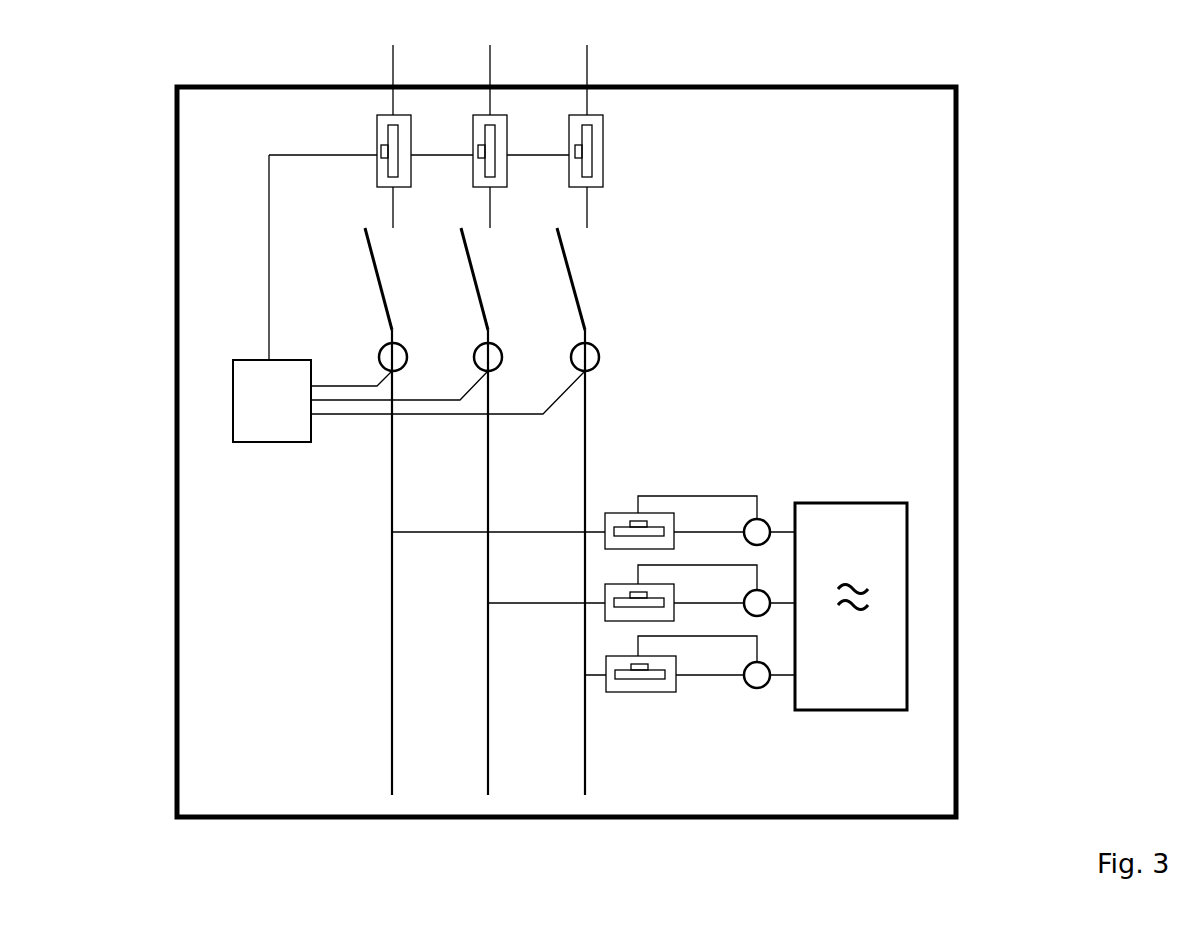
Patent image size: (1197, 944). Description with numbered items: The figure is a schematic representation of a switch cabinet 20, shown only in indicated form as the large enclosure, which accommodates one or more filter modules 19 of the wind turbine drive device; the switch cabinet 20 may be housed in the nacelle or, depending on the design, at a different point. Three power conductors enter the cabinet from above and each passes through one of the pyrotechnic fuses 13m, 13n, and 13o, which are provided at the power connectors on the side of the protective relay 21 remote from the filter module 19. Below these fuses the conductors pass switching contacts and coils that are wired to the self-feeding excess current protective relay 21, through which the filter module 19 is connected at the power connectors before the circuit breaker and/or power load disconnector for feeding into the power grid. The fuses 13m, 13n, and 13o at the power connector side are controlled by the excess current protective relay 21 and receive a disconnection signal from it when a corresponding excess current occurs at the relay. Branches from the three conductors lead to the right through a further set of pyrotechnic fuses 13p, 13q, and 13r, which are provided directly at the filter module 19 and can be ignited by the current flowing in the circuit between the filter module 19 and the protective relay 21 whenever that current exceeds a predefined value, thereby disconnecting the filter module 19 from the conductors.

The pyrotechnic fuse 13m is at (396, 112).
The pyrotechnic fuse 13n is at (503, 112).
The pyrotechnic fuse 13o is at (603, 112).
The pyrotechnic fuse 13p is at (601, 524).
The pyrotechnic fuse 13q is at (601, 596).
The pyrotechnic fuse 13r is at (601, 668).
The filter module 19 is at (911, 681).
The switch cabinet 20 is at (959, 557).
The self-feeding excess current protective relay 21 is at (231, 419).